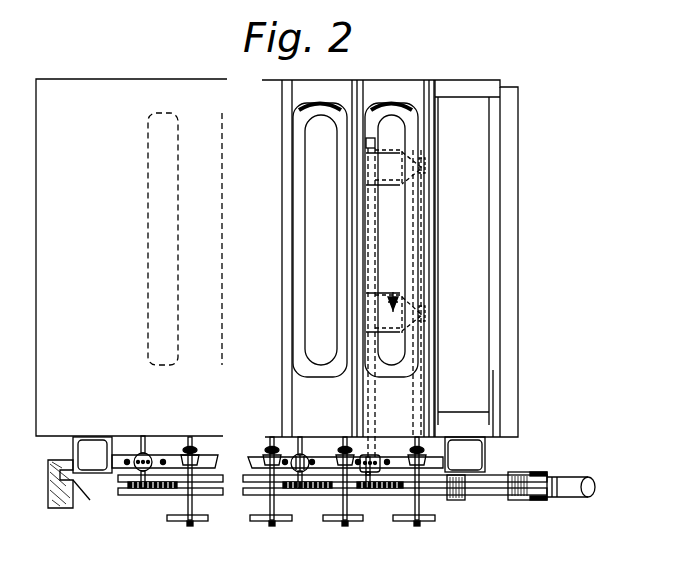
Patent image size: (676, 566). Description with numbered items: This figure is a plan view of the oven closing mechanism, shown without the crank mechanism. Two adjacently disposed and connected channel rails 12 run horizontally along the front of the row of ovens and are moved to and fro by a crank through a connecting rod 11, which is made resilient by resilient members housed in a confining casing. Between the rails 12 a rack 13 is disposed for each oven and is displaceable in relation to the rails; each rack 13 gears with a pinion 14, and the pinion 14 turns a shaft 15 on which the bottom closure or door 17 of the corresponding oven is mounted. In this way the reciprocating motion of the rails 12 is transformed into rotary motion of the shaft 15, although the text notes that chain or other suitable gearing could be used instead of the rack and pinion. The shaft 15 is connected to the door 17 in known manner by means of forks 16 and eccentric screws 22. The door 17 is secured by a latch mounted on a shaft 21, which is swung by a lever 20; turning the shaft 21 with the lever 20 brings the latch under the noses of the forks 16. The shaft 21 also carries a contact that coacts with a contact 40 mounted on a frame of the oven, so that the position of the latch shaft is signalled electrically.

The connecting rod 11 is at (572, 480).
The channel rails 12 is at (172, 497).
The rack 13 is at (325, 492).
The pinion 14 is at (371, 492).
The shaft 15 is at (370, 447).
The forks 16 is at (397, 188).
The bottom closure or door 17 is at (397, 240).
The lever 20 is at (352, 522).
The shaft 21 is at (274, 505).
The eccentric screws 22 is at (393, 296).
The contact 40 is at (420, 459).